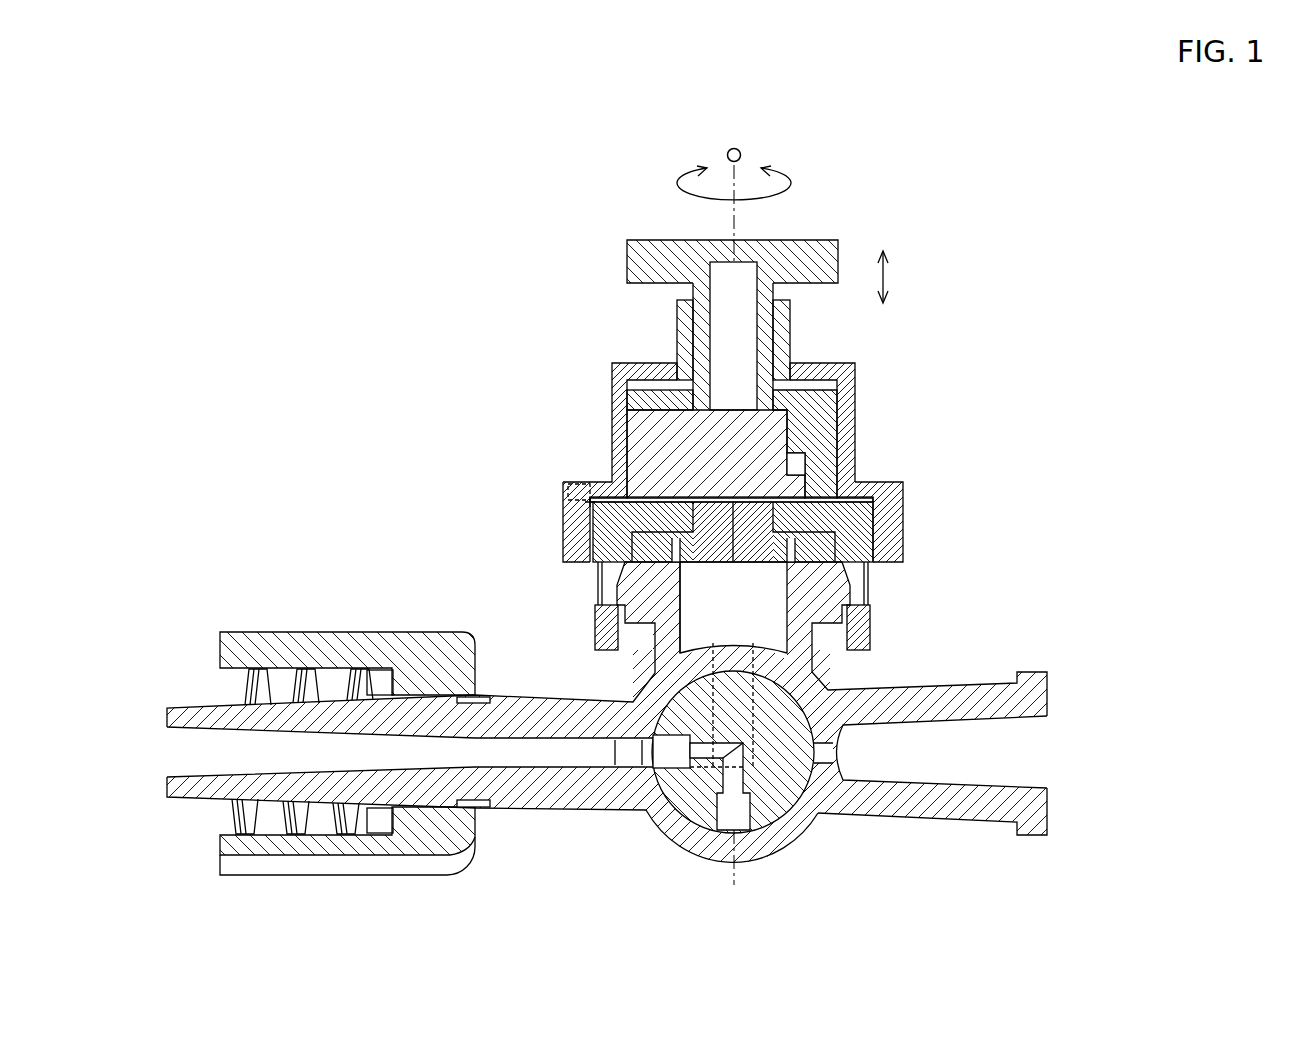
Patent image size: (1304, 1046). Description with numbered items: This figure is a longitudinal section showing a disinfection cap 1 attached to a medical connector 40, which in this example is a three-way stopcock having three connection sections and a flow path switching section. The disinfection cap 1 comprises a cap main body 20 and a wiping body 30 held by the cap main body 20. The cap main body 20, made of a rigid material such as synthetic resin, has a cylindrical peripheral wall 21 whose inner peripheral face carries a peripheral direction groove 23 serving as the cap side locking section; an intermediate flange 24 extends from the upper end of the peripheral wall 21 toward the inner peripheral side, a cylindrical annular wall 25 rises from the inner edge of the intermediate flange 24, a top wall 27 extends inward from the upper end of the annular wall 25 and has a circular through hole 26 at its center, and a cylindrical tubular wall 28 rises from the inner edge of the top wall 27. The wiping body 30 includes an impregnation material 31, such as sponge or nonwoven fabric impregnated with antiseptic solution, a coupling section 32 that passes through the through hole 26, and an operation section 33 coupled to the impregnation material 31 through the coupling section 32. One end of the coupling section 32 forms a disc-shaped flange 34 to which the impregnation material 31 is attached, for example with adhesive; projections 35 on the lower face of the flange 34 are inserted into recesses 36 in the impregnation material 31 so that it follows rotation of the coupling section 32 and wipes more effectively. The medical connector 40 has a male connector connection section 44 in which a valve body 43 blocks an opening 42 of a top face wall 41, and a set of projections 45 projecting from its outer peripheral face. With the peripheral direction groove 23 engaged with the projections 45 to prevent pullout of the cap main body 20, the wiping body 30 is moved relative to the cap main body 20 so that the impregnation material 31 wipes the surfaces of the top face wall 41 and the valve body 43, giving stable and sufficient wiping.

The disinfection cap 1 is at (1012, 360).
The cap main body 20 is at (610, 420).
The peripheral wall 21 is at (572, 550).
The peripheral direction groove 23 is at (584, 511).
The intermediate flange 24 is at (877, 484).
The annular wall 25 is at (843, 428).
The through hole 26 is at (767, 377).
The top wall 27 is at (813, 371).
The tubular wall 28 is at (782, 313).
The wiping body 30 is at (622, 258).
The impregnation material 31 is at (640, 452).
The coupling section 32 is at (686, 326).
The operation section 33 is at (663, 250).
The flange 34 is at (655, 392).
The projections 35 is at (803, 432).
The recesses 36 is at (806, 460).
The medical connector 40 is at (524, 632).
The top face wall 41 is at (817, 518).
The opening 42 is at (770, 520).
The valve body 43 is at (710, 563).
The male connector connection section 44 is at (808, 497).
The projections 45 is at (586, 502).